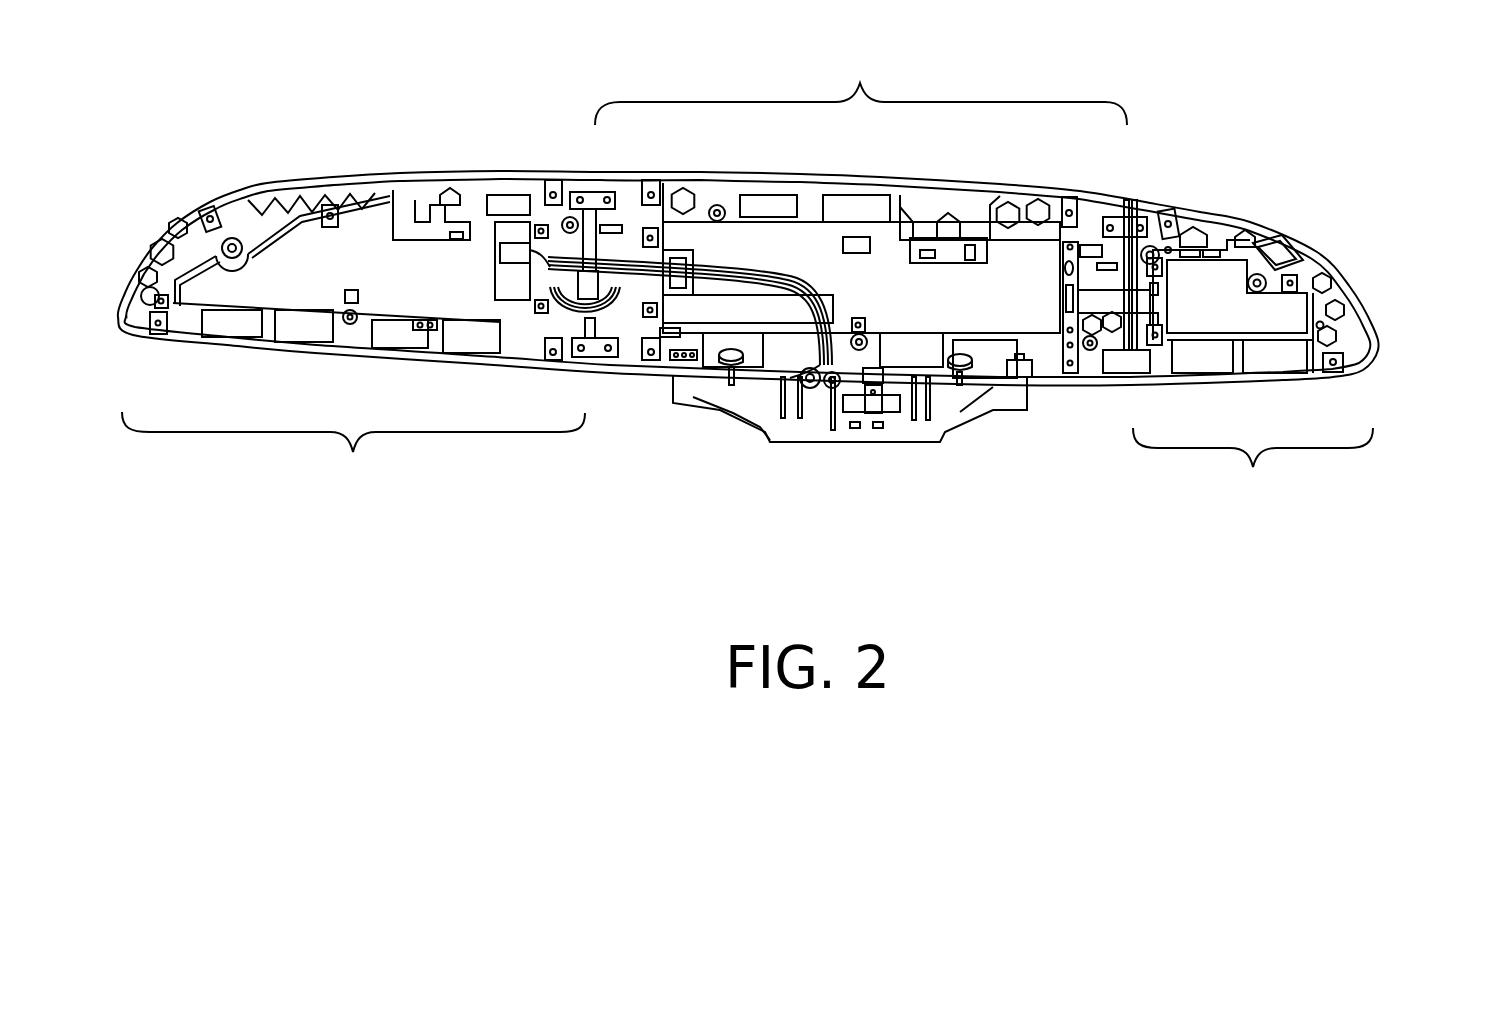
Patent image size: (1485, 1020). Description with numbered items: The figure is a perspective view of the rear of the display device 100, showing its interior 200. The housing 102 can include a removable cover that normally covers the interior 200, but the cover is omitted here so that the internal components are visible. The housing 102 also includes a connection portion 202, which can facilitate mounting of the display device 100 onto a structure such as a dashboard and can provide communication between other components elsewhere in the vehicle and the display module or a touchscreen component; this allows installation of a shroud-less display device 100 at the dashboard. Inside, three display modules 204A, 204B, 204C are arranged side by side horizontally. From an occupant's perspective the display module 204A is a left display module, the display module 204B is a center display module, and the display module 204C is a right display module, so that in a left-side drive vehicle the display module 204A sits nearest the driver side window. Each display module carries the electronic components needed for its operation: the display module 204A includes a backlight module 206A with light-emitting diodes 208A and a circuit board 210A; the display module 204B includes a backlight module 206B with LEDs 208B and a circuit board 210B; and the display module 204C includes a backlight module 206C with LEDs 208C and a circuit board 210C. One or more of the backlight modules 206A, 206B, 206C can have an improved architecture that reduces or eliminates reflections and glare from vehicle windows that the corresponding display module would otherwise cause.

The display device 100 is at (1420, 121).
The housing 102 is at (1040, 385).
The interior 200 is at (267, 168).
The connection portion 202 is at (830, 443).
The display module 204A is at (1218, 351).
The display module 204B is at (831, 205).
The display module 204C is at (353, 339).
The backlight module 206A is at (1237, 240).
The backlight module 206B is at (1018, 207).
The backlight module 206C is at (402, 212).
The light-emitting diodes 208A is at (1262, 364).
The LEDs 208B is at (905, 355).
The LEDs 208C is at (284, 338).
The circuit board 210A is at (1313, 297).
The circuit board 210B is at (757, 306).
The circuit board 210C is at (463, 258).